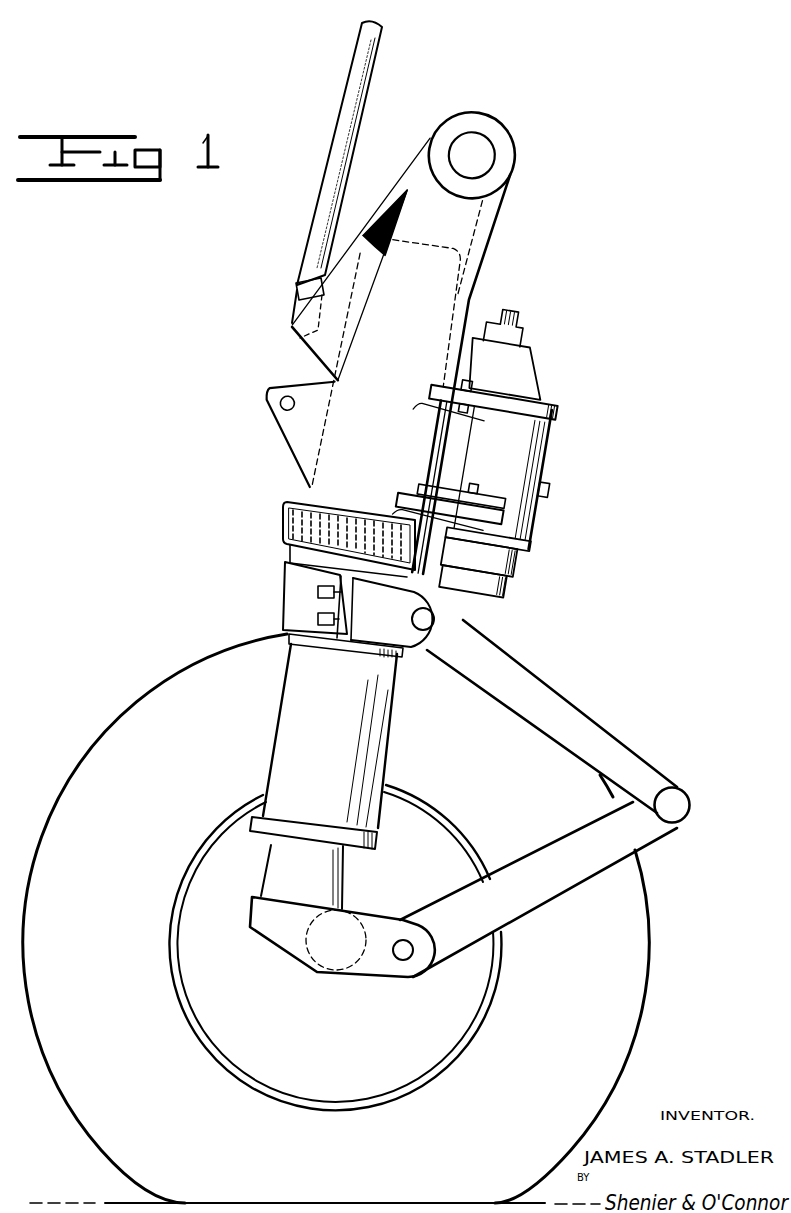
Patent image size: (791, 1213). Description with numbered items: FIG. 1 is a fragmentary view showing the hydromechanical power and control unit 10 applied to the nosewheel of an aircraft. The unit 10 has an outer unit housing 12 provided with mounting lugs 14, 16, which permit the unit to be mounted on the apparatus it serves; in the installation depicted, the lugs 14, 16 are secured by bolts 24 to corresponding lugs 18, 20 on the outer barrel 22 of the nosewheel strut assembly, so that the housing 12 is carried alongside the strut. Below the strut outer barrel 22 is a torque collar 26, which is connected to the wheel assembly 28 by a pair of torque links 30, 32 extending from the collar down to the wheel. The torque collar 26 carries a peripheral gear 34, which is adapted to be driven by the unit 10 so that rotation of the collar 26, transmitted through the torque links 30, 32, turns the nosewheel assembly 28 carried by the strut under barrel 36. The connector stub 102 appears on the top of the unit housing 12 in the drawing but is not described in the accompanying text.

The hydromechanical power and control unit 10 is at (510, 447).
The outer unit housing 12 is at (548, 468).
The mounting lug 14 is at (497, 405).
The mounting lug 16 is at (480, 502).
The lug 18 is at (443, 408).
The lug 20 is at (418, 497).
The outer barrel 22 is at (318, 480).
The bolt 24 is at (471, 388).
The torque collar 26 is at (296, 592).
The wheel assembly 28 is at (684, 942).
The torque link 30 is at (594, 720).
The torque link 32 is at (567, 890).
The peripheral gear 34 is at (282, 517).
The under barrel 36 is at (268, 866).
The actuator connector stub 102 is at (542, 331).